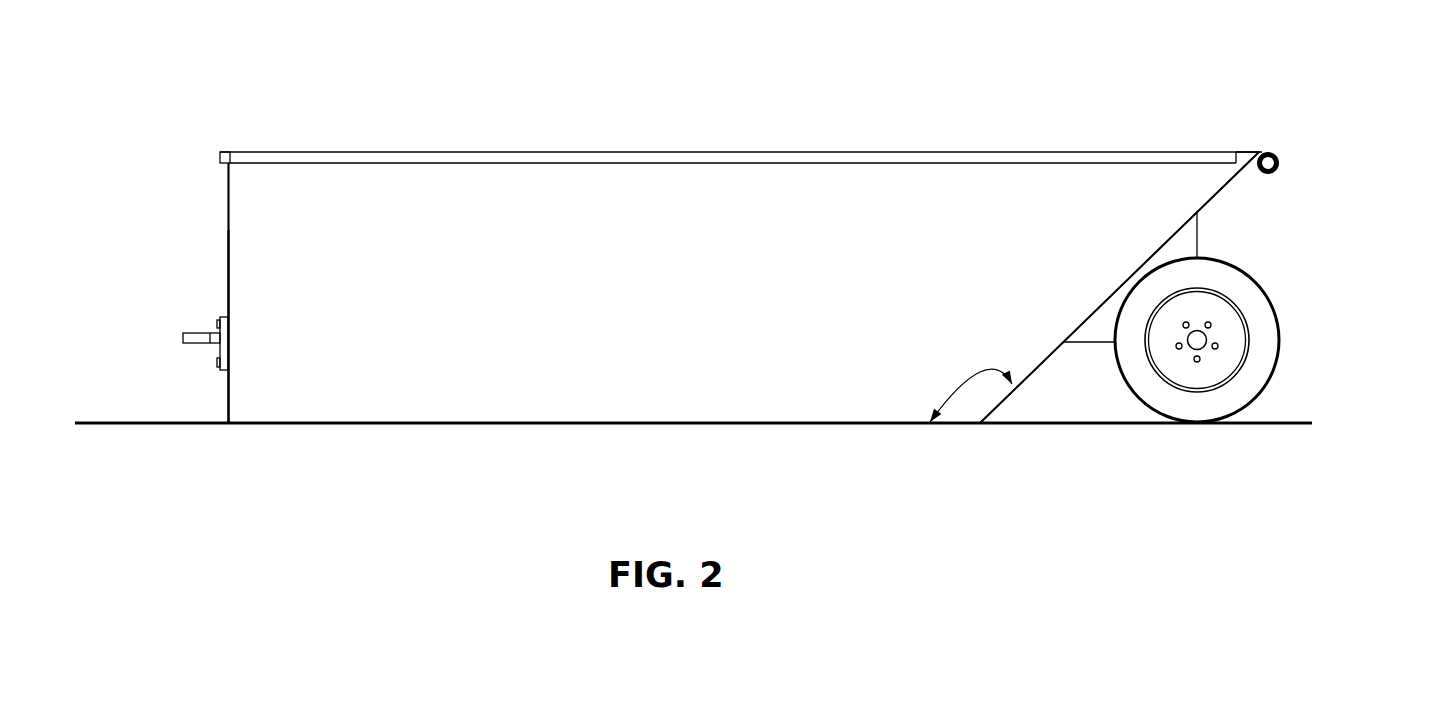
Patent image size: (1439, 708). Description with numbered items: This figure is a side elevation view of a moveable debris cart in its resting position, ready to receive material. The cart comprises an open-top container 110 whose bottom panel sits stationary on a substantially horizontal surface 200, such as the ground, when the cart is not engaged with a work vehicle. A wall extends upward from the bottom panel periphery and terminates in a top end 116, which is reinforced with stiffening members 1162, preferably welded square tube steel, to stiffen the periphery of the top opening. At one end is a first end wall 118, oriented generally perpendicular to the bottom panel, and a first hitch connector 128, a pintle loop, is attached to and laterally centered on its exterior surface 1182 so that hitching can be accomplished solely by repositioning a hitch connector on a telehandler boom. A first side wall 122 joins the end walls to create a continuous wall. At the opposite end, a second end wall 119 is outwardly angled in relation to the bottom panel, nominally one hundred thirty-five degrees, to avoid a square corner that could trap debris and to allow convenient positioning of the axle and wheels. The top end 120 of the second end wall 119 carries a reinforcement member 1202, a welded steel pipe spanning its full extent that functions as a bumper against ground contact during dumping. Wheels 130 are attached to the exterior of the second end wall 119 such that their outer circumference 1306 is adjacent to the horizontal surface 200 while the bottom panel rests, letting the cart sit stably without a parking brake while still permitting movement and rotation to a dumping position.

The open-top container 110 is at (928, 107).
The top end 116 is at (248, 152).
The stiffening members 1162 is at (220, 157).
The first end wall 118 is at (197, 205).
The exterior surface 1182 is at (228, 278).
The first hitch connector 128 is at (183, 332).
The substantially horizontal surface 200 is at (185, 421).
The first side wall 122 is at (676, 318).
The second end wall 119 is at (1225, 193).
The top end of the second end wall 120 is at (1263, 150).
The reinforcement member 1202 is at (1280, 160).
The wheels 130 is at (1283, 272).
The outer circumference 1306 is at (1280, 340).